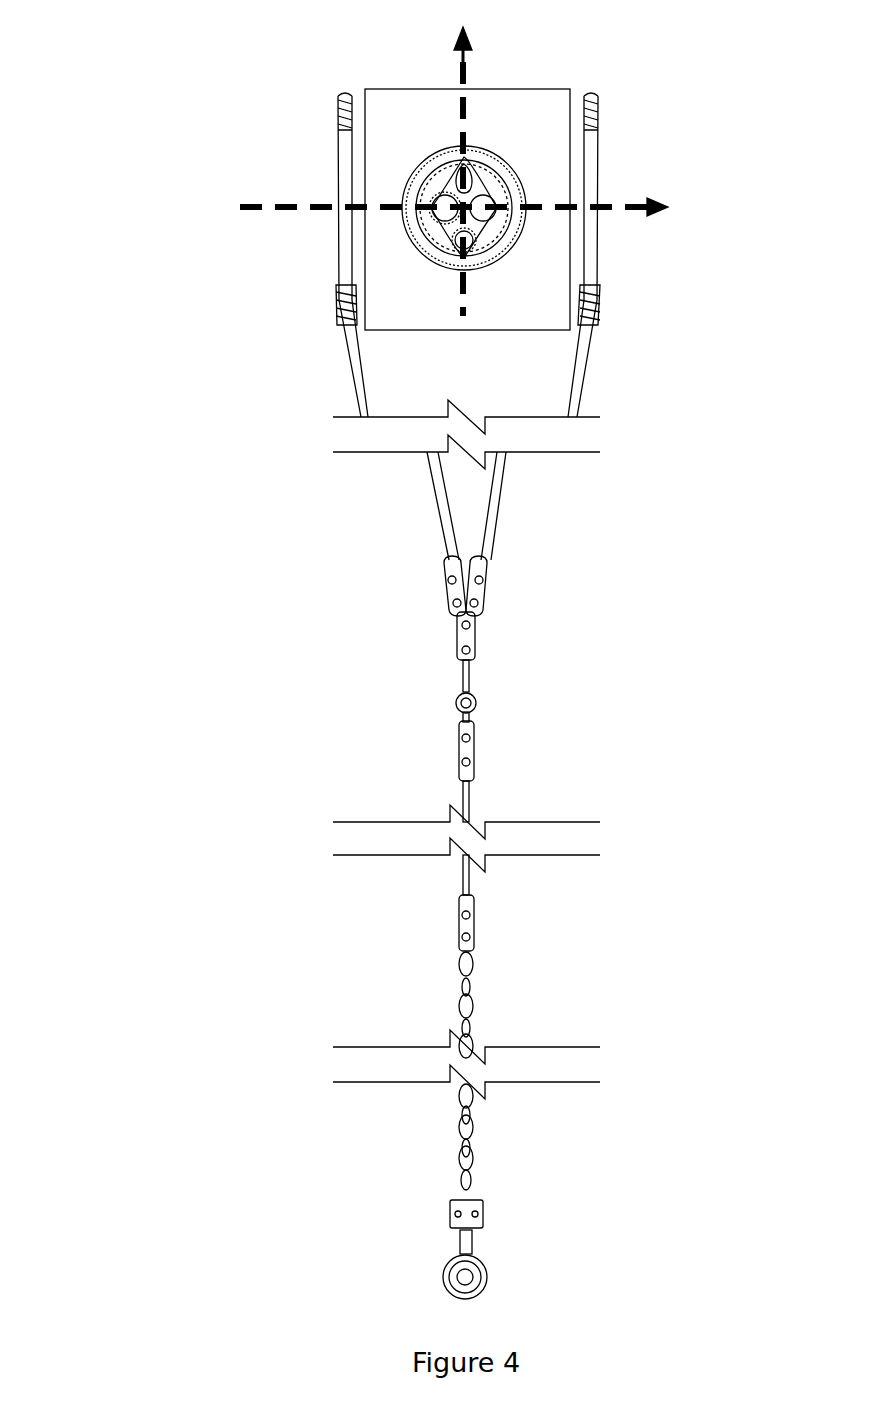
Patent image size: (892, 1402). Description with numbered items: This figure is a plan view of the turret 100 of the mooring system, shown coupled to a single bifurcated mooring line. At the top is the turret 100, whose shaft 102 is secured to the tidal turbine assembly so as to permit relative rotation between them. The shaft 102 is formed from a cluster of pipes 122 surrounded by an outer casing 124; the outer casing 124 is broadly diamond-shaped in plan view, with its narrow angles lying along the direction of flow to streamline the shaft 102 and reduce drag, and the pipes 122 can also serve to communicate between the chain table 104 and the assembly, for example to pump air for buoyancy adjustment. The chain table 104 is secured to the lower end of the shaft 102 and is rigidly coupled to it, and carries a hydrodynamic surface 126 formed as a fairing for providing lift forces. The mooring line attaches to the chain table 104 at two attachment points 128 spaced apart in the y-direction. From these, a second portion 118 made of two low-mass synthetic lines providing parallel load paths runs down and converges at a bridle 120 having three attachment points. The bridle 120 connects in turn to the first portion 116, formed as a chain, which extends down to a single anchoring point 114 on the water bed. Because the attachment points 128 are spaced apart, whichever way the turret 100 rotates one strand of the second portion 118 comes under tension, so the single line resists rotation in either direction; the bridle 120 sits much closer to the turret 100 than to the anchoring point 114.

The turret 100 is at (360, 66).
The shaft 102 is at (474, 178).
The chain table 104 is at (666, 143).
The anchoring point 114 is at (470, 1273).
The first portion 116 is at (277, 654).
The second portion 118 is at (282, 321).
The bridle 120 is at (476, 607).
The pipes 122 is at (476, 196).
The outer casing 124 is at (447, 183).
The hydrodynamic surface 126 is at (560, 252).
The attachment points 128 is at (342, 301).